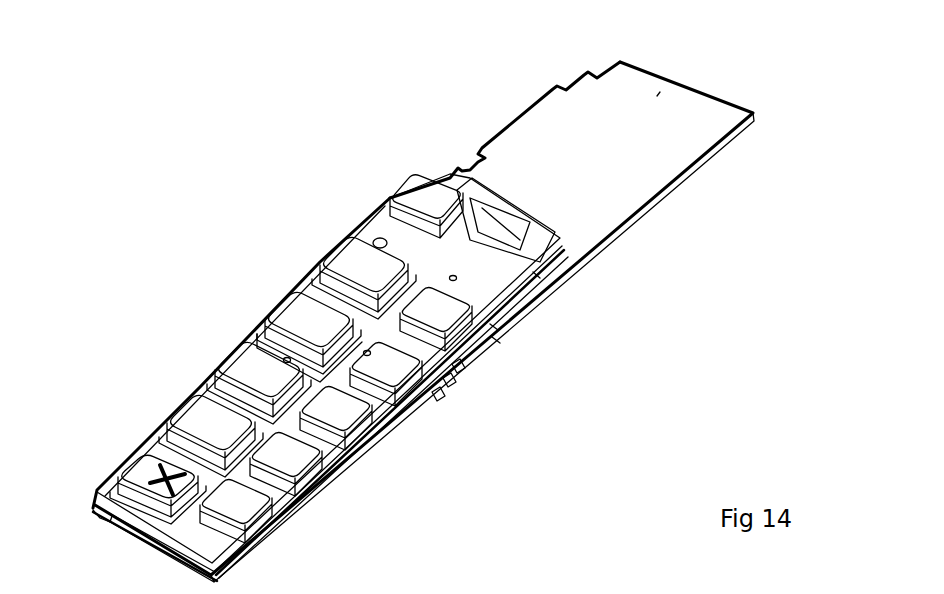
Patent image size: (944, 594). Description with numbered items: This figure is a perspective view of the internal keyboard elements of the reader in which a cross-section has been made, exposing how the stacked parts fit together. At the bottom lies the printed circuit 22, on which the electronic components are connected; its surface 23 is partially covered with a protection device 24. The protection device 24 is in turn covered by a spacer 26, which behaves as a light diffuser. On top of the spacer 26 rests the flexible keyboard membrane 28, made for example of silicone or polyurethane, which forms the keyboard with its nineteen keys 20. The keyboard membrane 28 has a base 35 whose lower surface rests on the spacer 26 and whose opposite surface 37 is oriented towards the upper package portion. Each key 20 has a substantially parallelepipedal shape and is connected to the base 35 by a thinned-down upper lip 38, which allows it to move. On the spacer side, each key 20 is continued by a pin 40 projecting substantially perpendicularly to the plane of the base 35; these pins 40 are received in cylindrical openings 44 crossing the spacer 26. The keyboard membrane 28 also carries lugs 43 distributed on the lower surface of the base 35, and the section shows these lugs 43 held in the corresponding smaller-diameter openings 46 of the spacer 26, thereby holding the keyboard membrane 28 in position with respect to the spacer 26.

The key 20 is at (432, 196).
The printed circuit 22 is at (714, 97).
The surface 23 is at (637, 92).
The protection device 24 is at (498, 341).
The spacer 26 is at (538, 276).
The keyboard membrane 28 is at (339, 244).
The base 35 is at (496, 331).
The surface 37 is at (107, 490).
The thinned-down upper lip 38 is at (256, 338).
The pin 40 is at (245, 525).
The lug 43 is at (451, 385).
The cylindrical opening 44 is at (444, 395).
The cylindrical opening 46 is at (458, 370).